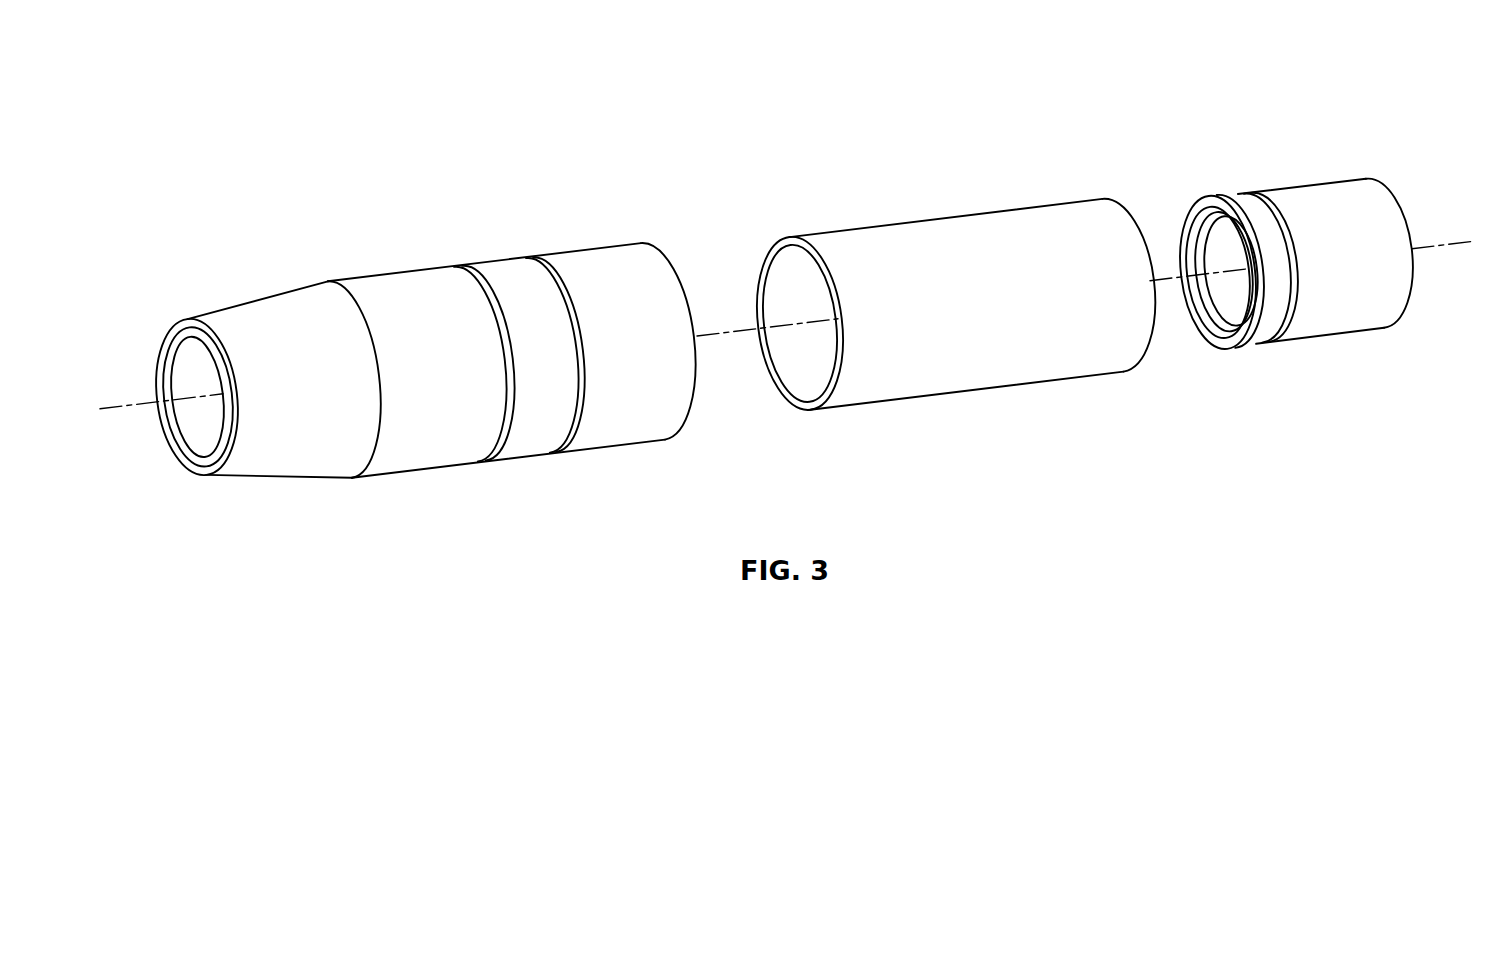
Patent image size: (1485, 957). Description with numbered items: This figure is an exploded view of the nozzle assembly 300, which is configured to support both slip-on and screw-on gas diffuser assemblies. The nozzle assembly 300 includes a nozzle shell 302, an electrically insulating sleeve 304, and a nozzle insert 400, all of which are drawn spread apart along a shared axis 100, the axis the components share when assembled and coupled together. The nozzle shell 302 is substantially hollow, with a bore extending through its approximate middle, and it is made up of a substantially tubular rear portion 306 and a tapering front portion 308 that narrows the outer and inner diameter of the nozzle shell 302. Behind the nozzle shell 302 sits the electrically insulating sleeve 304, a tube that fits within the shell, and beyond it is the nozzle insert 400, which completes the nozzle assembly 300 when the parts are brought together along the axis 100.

The nozzle assembly 300 is at (234, 74).
The tapering front portion 308 is at (265, 313).
The nozzle shell 302 is at (338, 264).
The tubular rear portion 306 is at (510, 280).
The electrically insulating sleeve 304 is at (957, 236).
The nozzle insert 400 is at (1254, 164).
The axis 100 is at (1452, 238).